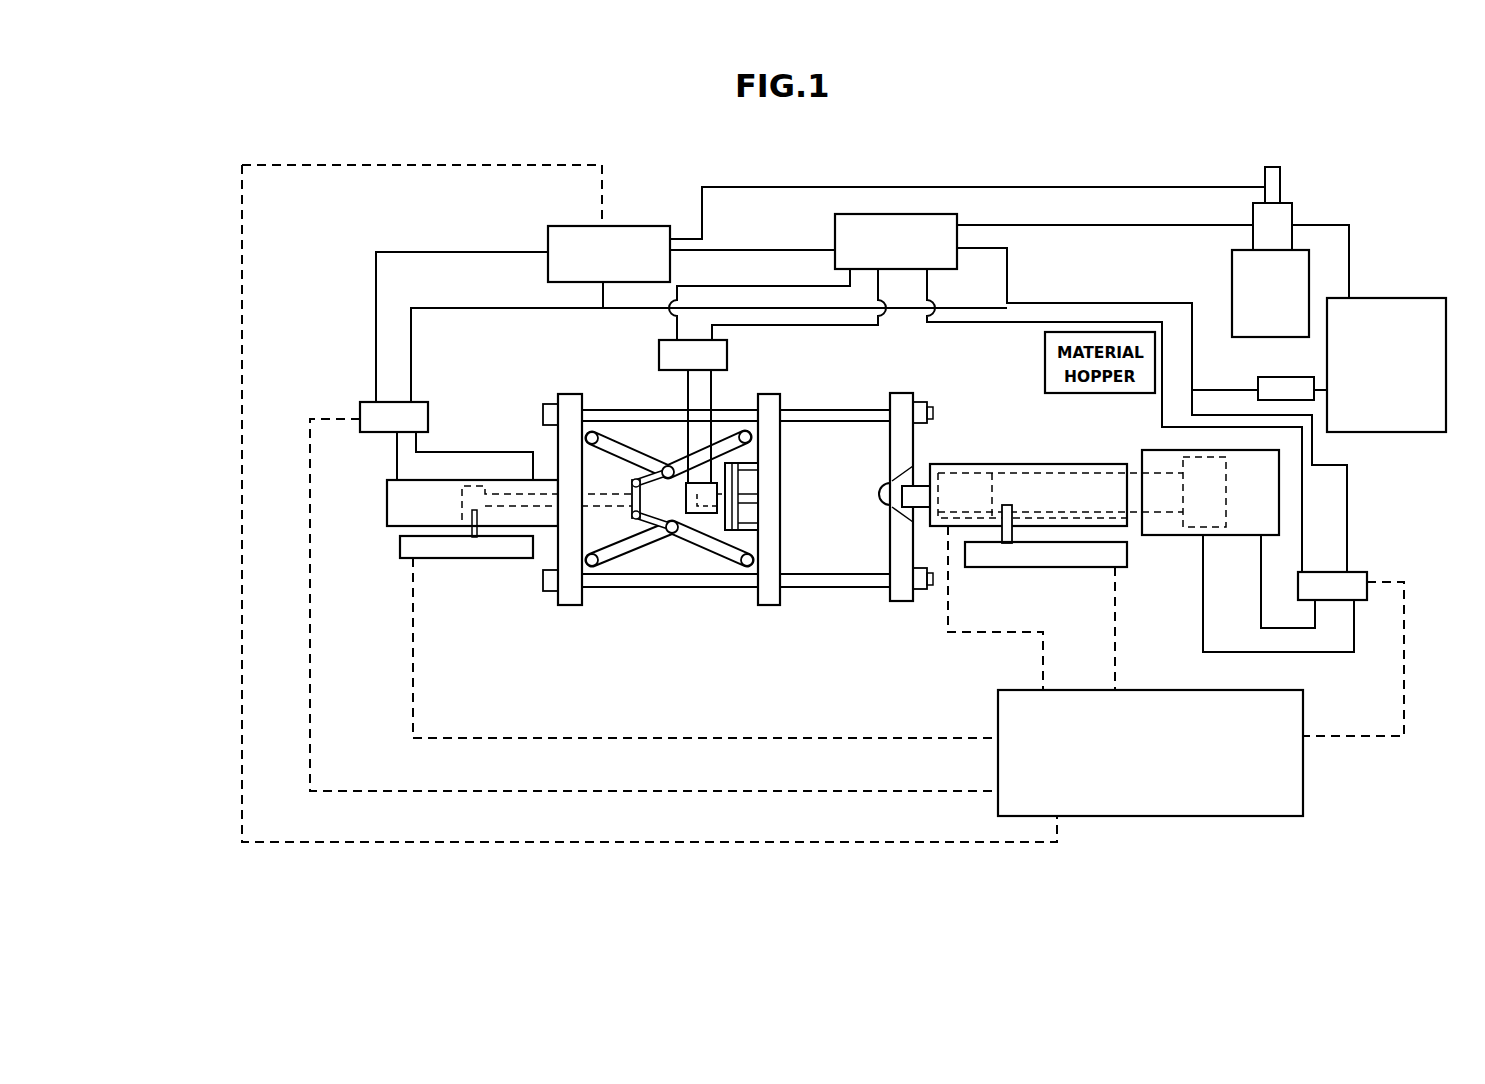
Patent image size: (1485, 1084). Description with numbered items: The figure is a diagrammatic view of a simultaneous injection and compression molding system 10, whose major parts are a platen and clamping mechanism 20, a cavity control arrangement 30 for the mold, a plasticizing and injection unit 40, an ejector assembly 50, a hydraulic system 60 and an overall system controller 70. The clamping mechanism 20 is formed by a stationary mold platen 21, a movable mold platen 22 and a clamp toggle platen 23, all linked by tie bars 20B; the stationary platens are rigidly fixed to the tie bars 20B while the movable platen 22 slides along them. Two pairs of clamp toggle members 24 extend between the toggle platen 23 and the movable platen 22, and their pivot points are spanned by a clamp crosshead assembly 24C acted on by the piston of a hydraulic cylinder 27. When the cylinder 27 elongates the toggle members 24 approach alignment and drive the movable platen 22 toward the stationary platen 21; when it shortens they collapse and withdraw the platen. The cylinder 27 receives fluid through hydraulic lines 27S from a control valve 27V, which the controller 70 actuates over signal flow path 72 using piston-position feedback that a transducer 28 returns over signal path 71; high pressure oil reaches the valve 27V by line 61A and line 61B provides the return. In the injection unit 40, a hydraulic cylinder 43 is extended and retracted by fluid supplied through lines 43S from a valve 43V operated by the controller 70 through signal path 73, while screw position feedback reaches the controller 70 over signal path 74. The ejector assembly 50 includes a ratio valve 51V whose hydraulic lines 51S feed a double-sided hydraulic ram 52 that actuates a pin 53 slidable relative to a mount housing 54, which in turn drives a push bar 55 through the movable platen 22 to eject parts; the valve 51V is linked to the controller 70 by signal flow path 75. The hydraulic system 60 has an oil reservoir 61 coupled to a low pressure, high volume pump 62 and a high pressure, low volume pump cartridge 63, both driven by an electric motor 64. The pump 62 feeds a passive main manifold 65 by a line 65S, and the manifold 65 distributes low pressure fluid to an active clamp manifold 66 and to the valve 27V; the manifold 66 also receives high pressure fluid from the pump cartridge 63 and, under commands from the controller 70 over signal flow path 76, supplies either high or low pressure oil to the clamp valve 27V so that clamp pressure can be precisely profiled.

The simultaneous injection and compression molding system 10 is at (275, 148).
The platen and clamping mechanism 20 is at (709, 550).
The tie bars 20B is at (672, 598).
The stationary mold platen 21 is at (906, 606).
The movable mold platen 22 is at (776, 610).
The clamp toggle platen 23 is at (566, 610).
The clamp toggle members 24 is at (682, 532).
The clamp crosshead assembly 24C is at (637, 512).
The hydraulic cylinder 27 is at (386, 505).
The hydraulic lines 27S is at (462, 448).
The control valve 27V is at (418, 400).
The transducer 28 is at (514, 568).
The cavity control arrangement 30 is at (716, 481).
The plasticizing and injection unit 40 is at (1188, 574).
The hydraulic cylinder 43 is at (1258, 537).
The hydraulic lines 43S is at (1259, 628).
The valve 43V is at (1349, 570).
The ejector assembly 50 is at (684, 495).
The hydraulic lines 51S is at (684, 398).
The ratio valve 51V is at (656, 356).
The double-sided hydraulic ram 52 is at (702, 480).
The pin 53 is at (765, 497).
The mount housing 54 is at (744, 515).
The push bar 55 is at (742, 484).
The hydraulic system 60 is at (1289, 279).
The oil reservoir 61 is at (1371, 434).
The line 61A is at (424, 250).
The line 61B is at (494, 306).
The pump 62 is at (1293, 212).
The pump cartridge 63 is at (1260, 168).
The electric motor 64 is at (1228, 277).
The passive manifold 65 is at (833, 240).
The line 65S is at (1118, 224).
The active manifold 66 is at (566, 226).
The system controller 70 is at (1236, 822).
The signal path 71 is at (774, 736).
The signal flow path 72 is at (601, 790).
The signal path 73 is at (1398, 664).
The signal path 74 is at (1108, 598).
The signal flow path 75 is at (990, 640).
The signal flow path 76 is at (239, 262).